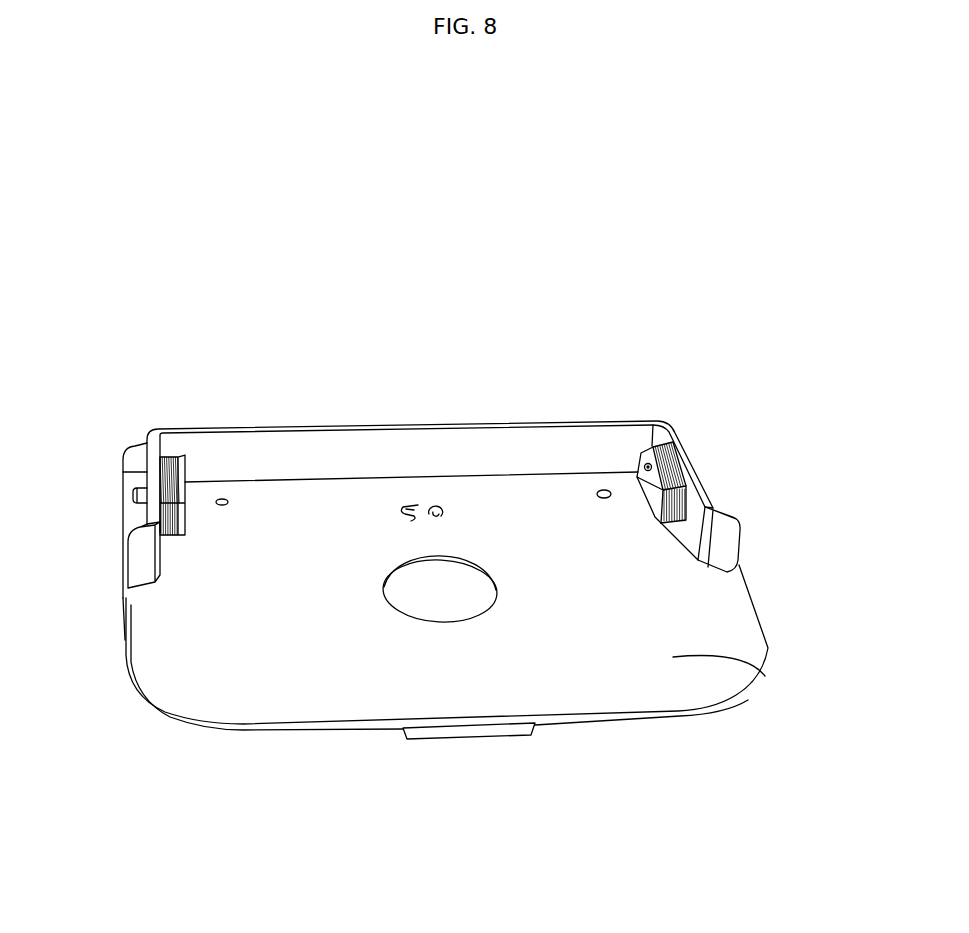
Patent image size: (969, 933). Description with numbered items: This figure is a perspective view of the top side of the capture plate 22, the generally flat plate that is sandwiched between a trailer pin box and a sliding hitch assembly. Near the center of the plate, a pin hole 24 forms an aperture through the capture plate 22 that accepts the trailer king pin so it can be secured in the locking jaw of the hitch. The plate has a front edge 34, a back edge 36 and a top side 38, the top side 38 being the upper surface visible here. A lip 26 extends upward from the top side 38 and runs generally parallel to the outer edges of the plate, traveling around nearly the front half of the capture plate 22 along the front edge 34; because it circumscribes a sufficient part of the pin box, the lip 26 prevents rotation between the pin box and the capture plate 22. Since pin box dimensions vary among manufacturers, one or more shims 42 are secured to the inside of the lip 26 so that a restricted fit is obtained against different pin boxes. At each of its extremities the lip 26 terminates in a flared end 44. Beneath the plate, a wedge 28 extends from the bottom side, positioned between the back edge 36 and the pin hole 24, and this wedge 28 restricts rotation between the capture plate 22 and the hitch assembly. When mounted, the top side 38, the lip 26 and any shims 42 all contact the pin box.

The capture plate 22 is at (347, 365).
The pin hole 24 is at (426, 590).
The lip 26 is at (442, 445).
The wedge 28 is at (493, 728).
The front edge 34 is at (140, 443).
The back edge 36 is at (587, 715).
The top side 38 is at (762, 673).
The shims 42 is at (182, 442).
The flared end 44 is at (143, 562).